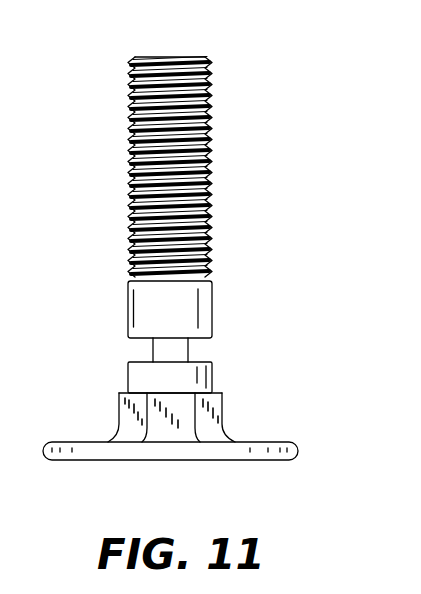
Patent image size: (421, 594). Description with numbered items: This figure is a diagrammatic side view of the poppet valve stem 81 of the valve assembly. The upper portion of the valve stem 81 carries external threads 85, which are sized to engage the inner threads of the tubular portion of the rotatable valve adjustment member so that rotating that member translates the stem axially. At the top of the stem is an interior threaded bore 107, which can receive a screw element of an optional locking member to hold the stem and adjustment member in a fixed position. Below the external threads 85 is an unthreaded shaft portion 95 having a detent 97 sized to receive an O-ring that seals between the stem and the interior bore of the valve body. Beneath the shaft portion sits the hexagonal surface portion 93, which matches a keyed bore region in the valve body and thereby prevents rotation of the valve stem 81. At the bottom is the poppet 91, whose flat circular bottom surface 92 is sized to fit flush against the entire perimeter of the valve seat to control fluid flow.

The interior threaded bore 107 is at (166, 54).
The external threads 85 is at (213, 193).
The poppet valve stem 81 is at (213, 288).
The detent 97 is at (197, 348).
The unthreaded shaft portion 95 is at (128, 378).
The hexagonal surface portion 93 is at (222, 413).
The poppet 91 is at (298, 451).
The flat circular bottom surface 92 is at (245, 461).